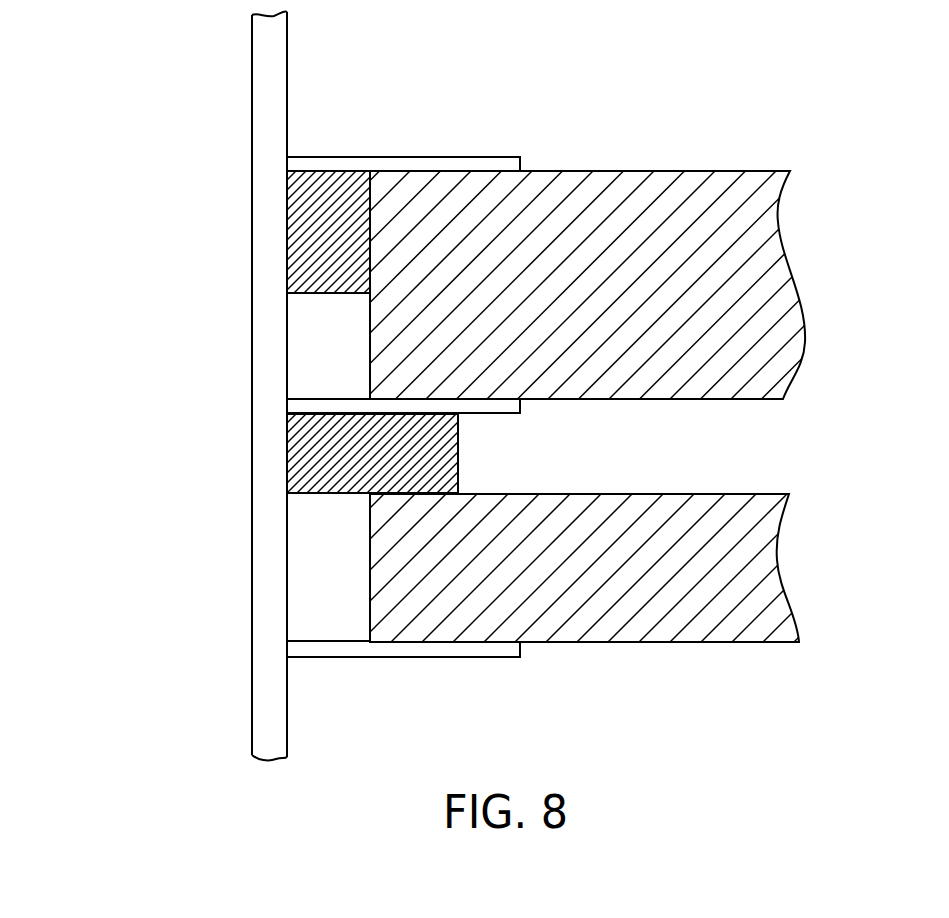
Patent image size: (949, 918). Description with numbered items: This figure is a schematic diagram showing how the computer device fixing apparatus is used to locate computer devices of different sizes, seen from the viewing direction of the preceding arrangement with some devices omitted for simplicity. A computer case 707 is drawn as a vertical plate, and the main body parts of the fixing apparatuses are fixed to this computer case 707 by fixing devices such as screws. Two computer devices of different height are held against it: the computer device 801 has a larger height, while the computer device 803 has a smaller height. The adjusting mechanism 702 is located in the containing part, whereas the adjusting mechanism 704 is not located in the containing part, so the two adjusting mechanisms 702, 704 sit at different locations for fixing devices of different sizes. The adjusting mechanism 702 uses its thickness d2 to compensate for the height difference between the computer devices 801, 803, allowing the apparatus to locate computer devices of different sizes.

The computer case 707 is at (265, 63).
The adjusting mechanism 702 is at (287, 232).
The adjusting mechanism 704 is at (287, 444).
The computer device 801 is at (757, 243).
The computer device 803 is at (743, 577).
The thickness d2 is at (458, 457).